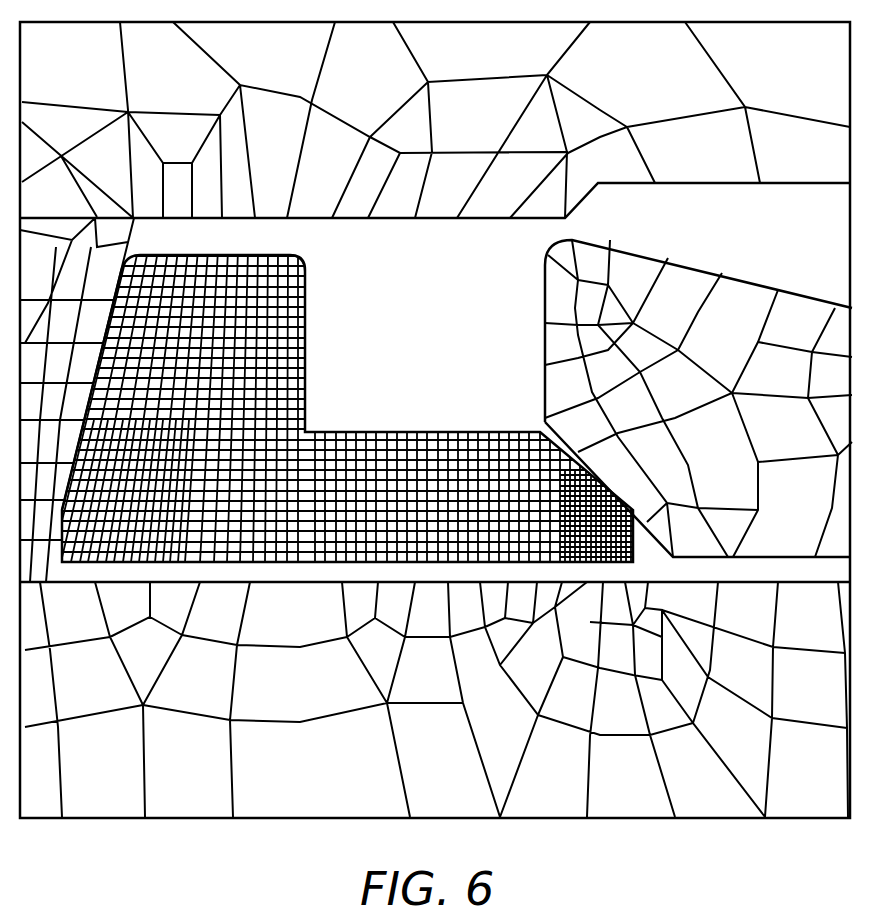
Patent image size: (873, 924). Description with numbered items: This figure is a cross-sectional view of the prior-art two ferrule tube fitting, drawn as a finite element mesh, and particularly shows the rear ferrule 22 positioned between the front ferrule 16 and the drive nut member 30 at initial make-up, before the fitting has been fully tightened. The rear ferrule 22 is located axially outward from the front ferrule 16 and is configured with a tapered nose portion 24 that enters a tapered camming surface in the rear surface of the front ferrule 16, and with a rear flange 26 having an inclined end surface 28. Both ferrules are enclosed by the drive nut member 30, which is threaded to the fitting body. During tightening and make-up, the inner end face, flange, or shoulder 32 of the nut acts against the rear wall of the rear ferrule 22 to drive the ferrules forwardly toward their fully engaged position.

The front ferrule 16 is at (685, 273).
The rear ferrule 22 is at (401, 427).
The tapered nose portion 24 is at (594, 476).
The rear flange 26 is at (302, 279).
The inclined end surface 28 is at (99, 329).
The drive nut member 30 is at (115, 177).
The inner end face, flange, or shoulder 32 is at (30, 537).